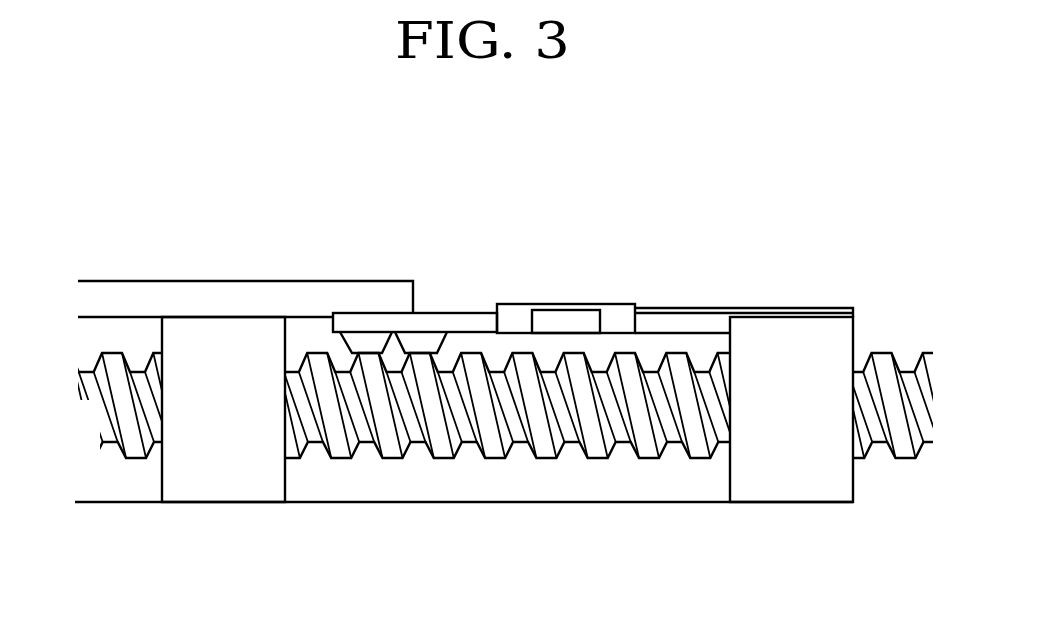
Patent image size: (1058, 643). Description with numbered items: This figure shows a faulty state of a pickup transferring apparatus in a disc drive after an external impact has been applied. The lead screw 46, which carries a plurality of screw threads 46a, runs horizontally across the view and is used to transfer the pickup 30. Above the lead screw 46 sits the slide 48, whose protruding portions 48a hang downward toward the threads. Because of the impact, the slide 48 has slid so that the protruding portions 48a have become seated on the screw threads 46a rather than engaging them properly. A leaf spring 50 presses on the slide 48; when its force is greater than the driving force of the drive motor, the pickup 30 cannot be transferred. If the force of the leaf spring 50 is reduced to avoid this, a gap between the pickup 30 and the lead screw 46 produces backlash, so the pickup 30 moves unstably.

The pickup 30 is at (207, 272).
The lead screw 46 is at (498, 474).
The screw threads 46a is at (440, 460).
The slide 48 is at (587, 298).
The protruding portions 48a is at (425, 338).
The leaf spring 50 is at (707, 308).